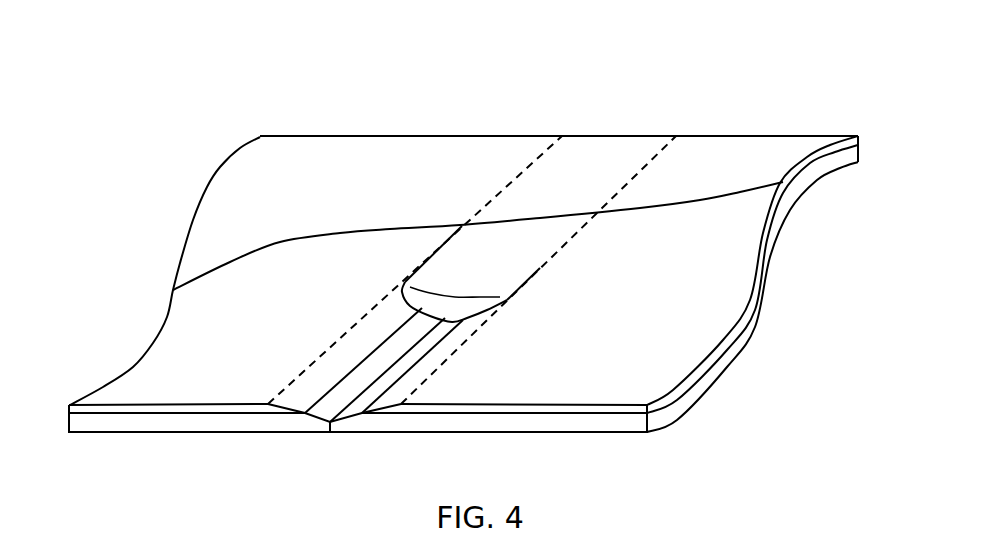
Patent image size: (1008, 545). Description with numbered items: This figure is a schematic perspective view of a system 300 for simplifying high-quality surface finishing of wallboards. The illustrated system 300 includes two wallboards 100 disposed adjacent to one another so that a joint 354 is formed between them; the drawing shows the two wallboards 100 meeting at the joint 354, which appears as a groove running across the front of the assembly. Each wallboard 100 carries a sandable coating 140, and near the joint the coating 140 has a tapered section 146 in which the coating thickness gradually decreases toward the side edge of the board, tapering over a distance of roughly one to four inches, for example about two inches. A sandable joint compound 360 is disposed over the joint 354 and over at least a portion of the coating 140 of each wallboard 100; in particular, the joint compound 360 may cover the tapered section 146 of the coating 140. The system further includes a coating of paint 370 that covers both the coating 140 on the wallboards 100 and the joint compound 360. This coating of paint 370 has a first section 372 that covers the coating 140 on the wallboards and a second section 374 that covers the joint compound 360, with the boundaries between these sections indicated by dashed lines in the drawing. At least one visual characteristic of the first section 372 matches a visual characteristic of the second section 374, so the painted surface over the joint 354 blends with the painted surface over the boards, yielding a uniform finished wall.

The wallboard 100 is at (330, 117).
The coating 140 is at (288, 288).
The tapered section 146 is at (313, 383).
The system 300 is at (708, 95).
The joint 354 is at (327, 452).
The joint compound 360 is at (490, 272).
The coating of paint 370 is at (425, 167).
The first section 372 is at (368, 180).
The second section 374 is at (593, 168).